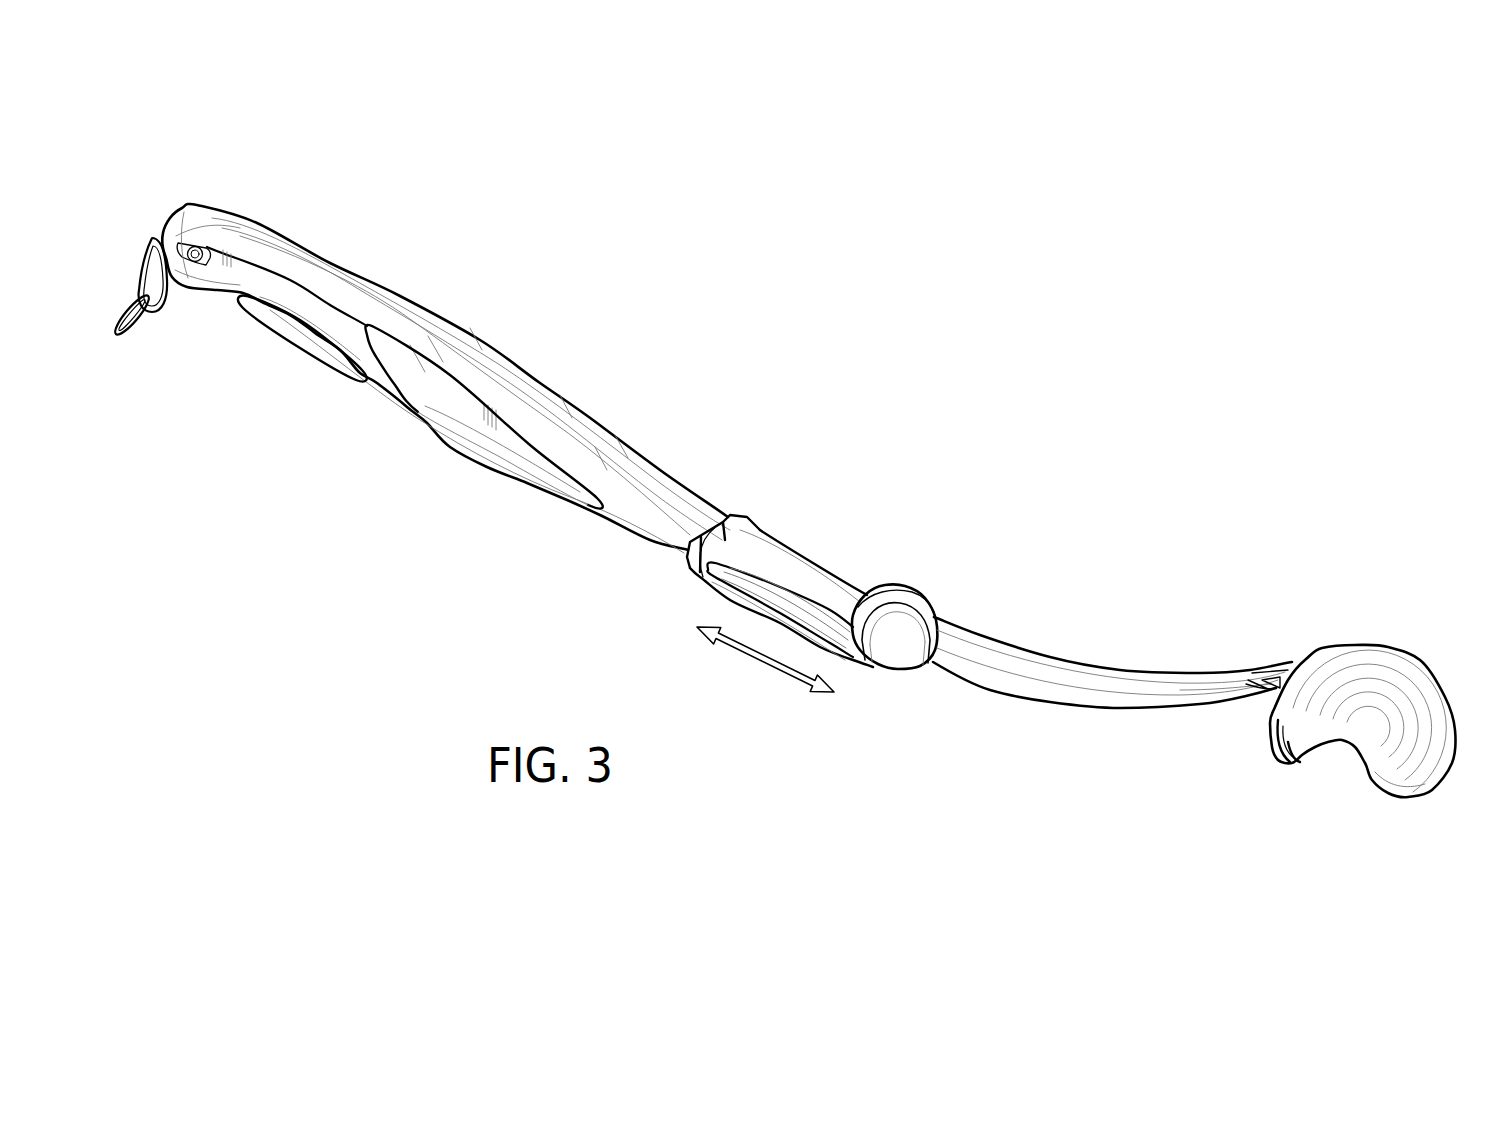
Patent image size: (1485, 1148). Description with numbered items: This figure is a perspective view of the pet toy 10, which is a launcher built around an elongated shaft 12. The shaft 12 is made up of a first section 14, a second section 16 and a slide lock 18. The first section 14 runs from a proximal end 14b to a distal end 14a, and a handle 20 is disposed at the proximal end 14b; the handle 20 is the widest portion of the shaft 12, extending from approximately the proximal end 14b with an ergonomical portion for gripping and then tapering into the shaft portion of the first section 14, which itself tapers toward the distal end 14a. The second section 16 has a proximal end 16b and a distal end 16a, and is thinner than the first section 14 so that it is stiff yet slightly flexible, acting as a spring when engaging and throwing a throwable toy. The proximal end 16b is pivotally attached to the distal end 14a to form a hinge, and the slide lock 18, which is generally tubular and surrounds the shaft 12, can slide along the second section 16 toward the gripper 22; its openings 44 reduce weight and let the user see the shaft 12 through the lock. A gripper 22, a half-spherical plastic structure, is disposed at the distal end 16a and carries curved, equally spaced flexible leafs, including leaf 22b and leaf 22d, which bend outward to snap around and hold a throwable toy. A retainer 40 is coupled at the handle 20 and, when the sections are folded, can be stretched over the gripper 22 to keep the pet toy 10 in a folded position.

The pet toy 10 is at (1044, 478).
The elongated shaft 12 is at (465, 325).
The first section 14 is at (443, 432).
The distal end of the first section 14a is at (767, 610).
The proximal end of the first section 14b is at (205, 207).
The second section 16 is at (1093, 710).
The distal end of the second section 16a is at (1293, 660).
The proximal end of the second section 16b is at (807, 613).
The slide lock 18 is at (855, 577).
The handle 20 is at (323, 370).
The gripper 22 is at (1433, 657).
The flexible leaf 22b is at (1410, 800).
The flexible leaf 22d is at (1297, 762).
The retainer 40 is at (166, 318).
The openings 44 is at (885, 583).